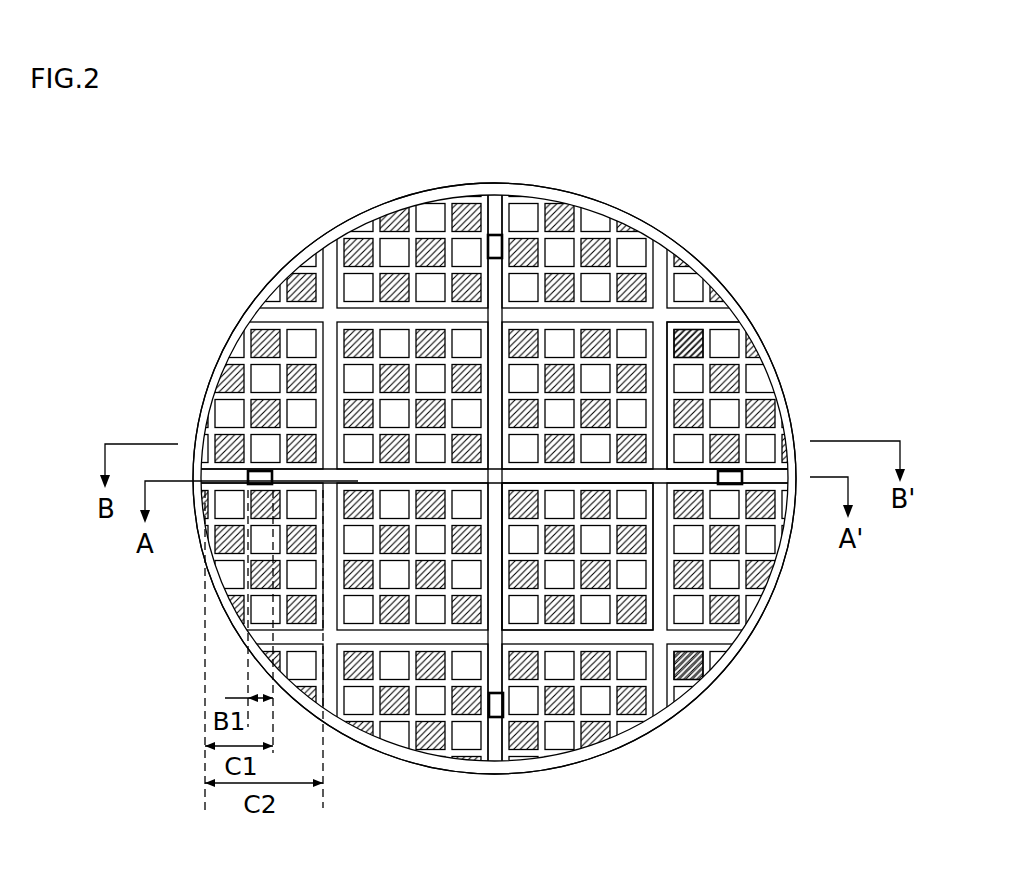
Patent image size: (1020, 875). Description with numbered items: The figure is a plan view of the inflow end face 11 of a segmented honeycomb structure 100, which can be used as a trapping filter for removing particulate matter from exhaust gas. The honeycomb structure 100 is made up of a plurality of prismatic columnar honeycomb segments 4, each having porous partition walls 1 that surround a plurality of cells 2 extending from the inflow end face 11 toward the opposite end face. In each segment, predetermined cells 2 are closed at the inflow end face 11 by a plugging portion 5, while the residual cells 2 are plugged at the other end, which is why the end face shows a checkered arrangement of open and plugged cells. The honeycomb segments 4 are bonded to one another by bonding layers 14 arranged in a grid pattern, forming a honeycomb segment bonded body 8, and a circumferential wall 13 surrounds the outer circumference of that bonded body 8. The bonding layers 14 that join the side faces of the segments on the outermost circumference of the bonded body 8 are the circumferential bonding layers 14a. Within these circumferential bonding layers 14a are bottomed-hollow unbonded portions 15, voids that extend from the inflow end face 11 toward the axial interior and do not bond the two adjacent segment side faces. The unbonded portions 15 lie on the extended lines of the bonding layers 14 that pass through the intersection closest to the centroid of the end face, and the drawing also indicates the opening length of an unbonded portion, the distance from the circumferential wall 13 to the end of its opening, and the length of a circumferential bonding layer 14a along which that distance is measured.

The honeycomb structure 100 is at (818, 103).
The inflow end face 11 is at (298, 226).
The partition walls 1 is at (613, 348).
The plugging portion 5 is at (563, 370).
The cells 2 is at (653, 375).
The honeycomb segment bonded body 8 is at (735, 325).
The honeycomb segments 4 is at (658, 415).
The circumferential wall 13 is at (698, 677).
The bonding layers 14 is at (403, 318).
The circumferential bonding layers 14a is at (495, 217).
The unbonded portions 15 is at (488, 247).